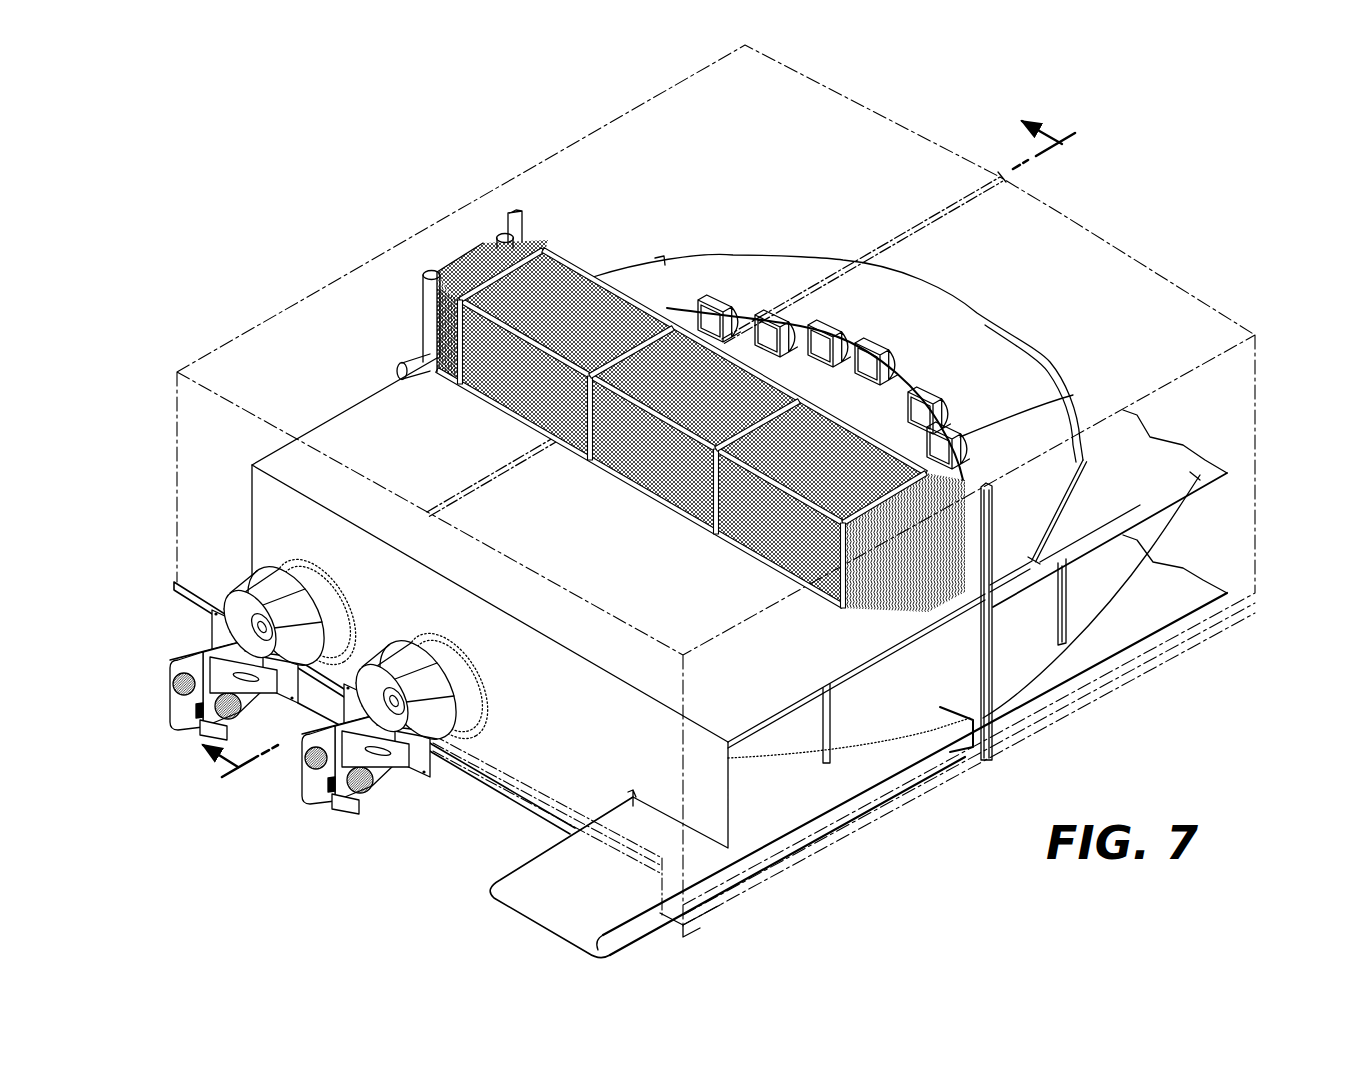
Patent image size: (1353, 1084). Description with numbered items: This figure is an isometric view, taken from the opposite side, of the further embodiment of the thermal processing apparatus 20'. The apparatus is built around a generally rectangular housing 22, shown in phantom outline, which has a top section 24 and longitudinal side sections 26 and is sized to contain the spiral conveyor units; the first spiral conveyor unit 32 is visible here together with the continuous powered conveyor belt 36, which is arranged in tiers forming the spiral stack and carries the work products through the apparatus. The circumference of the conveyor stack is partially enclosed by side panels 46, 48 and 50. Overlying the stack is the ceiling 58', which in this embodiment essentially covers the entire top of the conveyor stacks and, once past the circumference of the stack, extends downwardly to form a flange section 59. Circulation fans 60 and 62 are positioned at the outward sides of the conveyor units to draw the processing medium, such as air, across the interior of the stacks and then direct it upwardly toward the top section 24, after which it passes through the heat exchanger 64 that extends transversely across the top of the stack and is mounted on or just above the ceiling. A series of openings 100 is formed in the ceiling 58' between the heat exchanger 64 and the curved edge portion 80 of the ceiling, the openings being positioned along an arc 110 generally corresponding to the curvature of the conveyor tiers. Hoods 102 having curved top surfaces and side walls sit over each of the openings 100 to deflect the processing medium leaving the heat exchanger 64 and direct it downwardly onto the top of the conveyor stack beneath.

The thermal processing apparatus 20' is at (649, 456).
The housing 22 is at (281, 306).
The top section 24 is at (583, 158).
The longitudinal side section 26 is at (1213, 530).
The first spiral conveyor unit 32 is at (761, 820).
The conveyor belt 36 is at (565, 892).
The side panel 46 is at (797, 743).
The side panel 48 is at (898, 717).
The side panel 50 is at (1037, 667).
The ceiling 58' is at (1130, 393).
The flange section 59 is at (270, 507).
The circulation fan 60 is at (178, 706).
The circulation fan 62 is at (300, 780).
The heat exchanger 64 is at (475, 257).
The curved outer edge 80 is at (995, 318).
The openings 100 is at (820, 350).
The hoods 102 is at (1073, 395).
The arc 110 is at (683, 310).